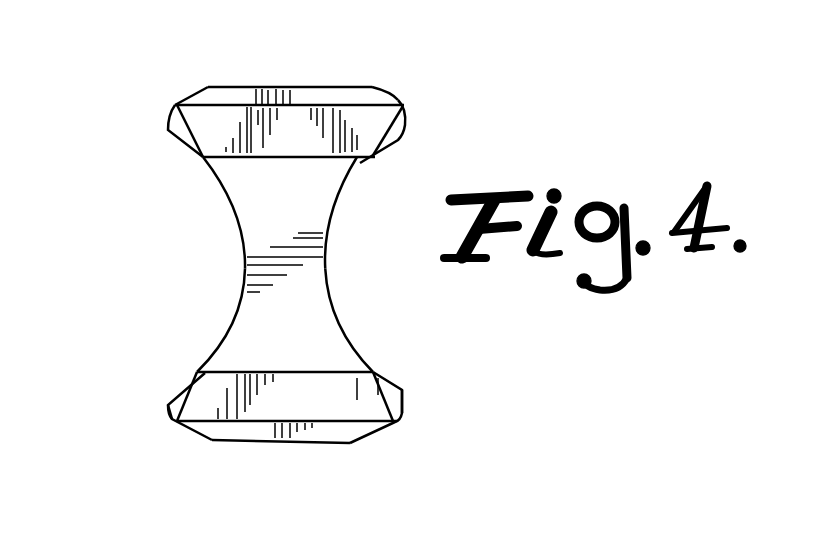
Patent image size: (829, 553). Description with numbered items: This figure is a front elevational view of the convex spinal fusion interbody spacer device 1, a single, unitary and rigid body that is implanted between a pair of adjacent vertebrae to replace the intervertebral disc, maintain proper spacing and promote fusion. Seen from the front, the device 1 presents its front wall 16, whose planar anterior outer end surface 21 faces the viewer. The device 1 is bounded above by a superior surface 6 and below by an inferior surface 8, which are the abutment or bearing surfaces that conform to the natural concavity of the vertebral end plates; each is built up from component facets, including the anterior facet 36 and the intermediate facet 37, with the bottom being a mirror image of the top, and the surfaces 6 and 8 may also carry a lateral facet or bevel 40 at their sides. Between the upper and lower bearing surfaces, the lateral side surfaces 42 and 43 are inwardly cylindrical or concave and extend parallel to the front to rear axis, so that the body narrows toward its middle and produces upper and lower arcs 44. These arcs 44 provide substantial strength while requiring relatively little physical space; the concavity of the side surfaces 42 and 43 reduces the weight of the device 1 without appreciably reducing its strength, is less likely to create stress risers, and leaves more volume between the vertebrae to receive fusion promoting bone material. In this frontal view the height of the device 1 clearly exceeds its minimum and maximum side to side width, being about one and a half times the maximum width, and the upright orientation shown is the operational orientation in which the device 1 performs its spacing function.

The convex spinal fusion interbody spacer device 1 is at (132, 269).
The superior surface 6 is at (275, 88).
The inferior surface 8 is at (337, 430).
The front wall 16 is at (262, 331).
The anterior outer end surface 21 is at (327, 187).
The anterior facet 36 is at (355, 172).
The intermediate facet 37 is at (205, 88).
The lateral facet 40 is at (180, 400).
The side surface 42 is at (232, 200).
The side surface 43 is at (332, 302).
The upper and lower arcs 44 is at (203, 160).